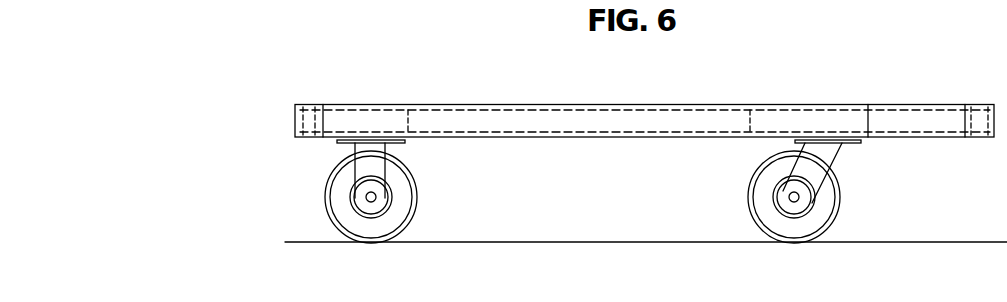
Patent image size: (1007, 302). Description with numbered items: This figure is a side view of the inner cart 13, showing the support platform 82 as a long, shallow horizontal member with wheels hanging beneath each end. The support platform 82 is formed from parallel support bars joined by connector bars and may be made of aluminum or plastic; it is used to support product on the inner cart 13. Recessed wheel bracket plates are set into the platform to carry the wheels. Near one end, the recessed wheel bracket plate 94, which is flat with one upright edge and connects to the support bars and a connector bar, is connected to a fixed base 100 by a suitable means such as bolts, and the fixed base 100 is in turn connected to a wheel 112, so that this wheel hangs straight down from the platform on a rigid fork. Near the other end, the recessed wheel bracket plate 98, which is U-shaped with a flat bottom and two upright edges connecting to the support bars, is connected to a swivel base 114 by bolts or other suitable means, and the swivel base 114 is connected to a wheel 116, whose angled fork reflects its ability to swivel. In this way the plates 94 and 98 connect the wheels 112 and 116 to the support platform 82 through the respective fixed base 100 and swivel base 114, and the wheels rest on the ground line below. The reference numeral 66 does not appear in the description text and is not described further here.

The inner cart 13 is at (245, 167).
The platform 66 is at (538, 90).
The support platform 82 is at (287, 114).
The recessed wheel bracket plate 94 is at (420, 126).
The recessed wheel bracket plate 98 is at (874, 121).
The fixed base 100 is at (354, 148).
The wheel 112 is at (417, 212).
The swivel base 114 is at (834, 155).
The wheel 116 is at (841, 213).